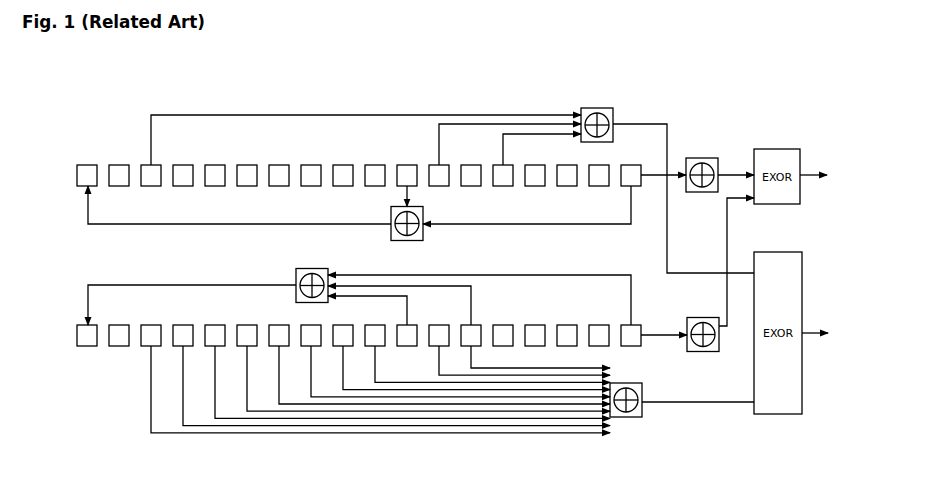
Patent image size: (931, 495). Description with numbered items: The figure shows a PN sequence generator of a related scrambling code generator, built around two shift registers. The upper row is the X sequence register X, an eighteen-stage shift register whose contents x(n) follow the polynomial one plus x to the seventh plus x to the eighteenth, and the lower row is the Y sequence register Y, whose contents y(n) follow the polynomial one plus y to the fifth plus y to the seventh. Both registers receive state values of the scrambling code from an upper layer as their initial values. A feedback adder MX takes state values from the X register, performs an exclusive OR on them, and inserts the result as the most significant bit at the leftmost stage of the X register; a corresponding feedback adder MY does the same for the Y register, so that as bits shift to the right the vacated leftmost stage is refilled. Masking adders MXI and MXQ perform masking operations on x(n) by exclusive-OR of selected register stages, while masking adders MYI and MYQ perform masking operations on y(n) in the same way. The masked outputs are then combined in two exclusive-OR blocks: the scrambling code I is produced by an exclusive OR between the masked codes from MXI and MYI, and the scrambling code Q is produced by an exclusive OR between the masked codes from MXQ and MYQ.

The X sequence register X is at (339, 176).
The Y sequence register Y is at (340, 336).
The MXQ masking unit MXQ is at (452, 182).
The MX feedback EXOR MX is at (359, 222).
The MXI masking unit MXI is at (697, 168).
The MY feedback EXOR MY is at (359, 290).
The MYI masking unit MYI is at (697, 275).
The MYQ masking unit MYQ is at (452, 392).
The I code I is at (820, 176).
The Q code Q is at (822, 334).